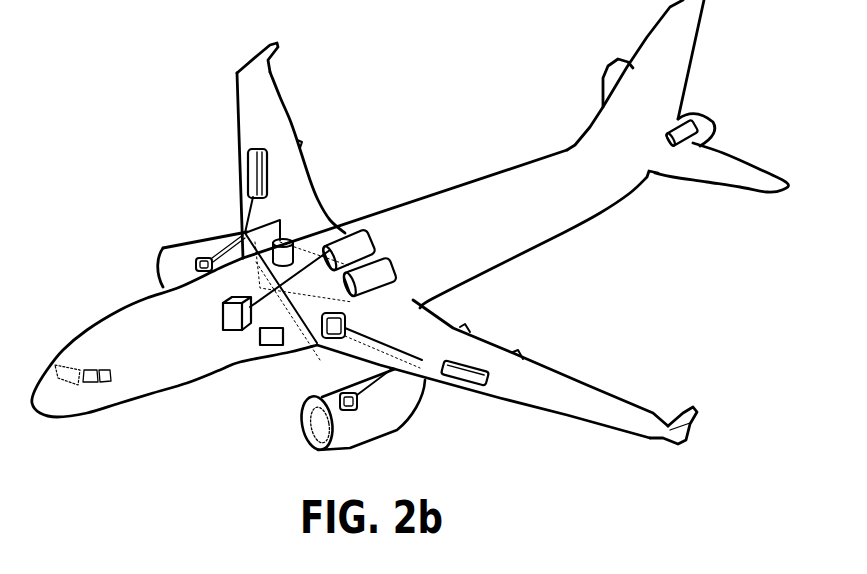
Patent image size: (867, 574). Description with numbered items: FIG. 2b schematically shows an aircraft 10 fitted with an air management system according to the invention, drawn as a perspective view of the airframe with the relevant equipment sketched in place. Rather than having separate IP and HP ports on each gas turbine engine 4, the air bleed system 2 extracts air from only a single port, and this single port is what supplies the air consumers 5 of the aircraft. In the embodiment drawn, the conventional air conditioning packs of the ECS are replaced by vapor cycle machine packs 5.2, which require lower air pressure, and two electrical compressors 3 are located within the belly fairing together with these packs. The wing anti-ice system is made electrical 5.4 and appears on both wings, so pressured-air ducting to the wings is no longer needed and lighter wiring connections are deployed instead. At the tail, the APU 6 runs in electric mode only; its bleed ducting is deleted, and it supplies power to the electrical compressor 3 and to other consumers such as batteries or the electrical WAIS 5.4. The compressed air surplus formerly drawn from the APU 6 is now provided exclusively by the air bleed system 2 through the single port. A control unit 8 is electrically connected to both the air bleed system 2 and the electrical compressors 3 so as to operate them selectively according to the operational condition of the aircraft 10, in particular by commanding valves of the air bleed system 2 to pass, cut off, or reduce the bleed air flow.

The aircraft 10 is at (118, 263).
The air bleed system 2 is at (248, 340).
The electrical compressor 3 is at (290, 235).
The gas turbine engine 4 is at (370, 417).
The air consumers 5 is at (268, 345).
The vapor cycle machine pack 5.2 is at (384, 262).
The electrical wing anti-ice system 5.4 is at (247, 163).
The APU 6 is at (696, 113).
The control unit 8 is at (222, 322).